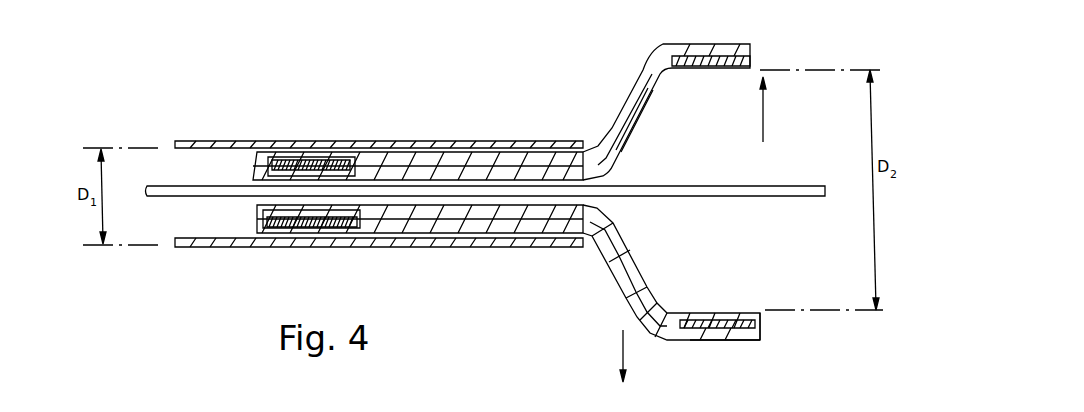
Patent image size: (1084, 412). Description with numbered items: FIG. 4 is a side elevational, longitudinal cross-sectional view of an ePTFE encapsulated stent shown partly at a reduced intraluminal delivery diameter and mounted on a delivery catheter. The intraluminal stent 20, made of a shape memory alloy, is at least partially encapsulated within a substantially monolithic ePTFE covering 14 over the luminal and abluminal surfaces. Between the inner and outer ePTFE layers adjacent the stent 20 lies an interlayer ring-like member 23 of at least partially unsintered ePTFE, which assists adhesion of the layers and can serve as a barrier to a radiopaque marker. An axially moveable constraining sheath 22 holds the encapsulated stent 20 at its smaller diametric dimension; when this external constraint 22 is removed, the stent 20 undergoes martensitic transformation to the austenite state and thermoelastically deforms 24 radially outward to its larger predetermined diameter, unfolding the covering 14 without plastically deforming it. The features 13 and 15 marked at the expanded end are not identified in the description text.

The flange end portion 13 is at (760, 323).
The ePTFE covering 14 is at (380, 150).
The flange lower surface 15 is at (760, 336).
The intraluminal stent 20 is at (697, 44).
The constraining sheath 22 is at (460, 141).
The ring-like member 23 is at (293, 157).
The thermoelastic deformation 24 is at (771, 96).